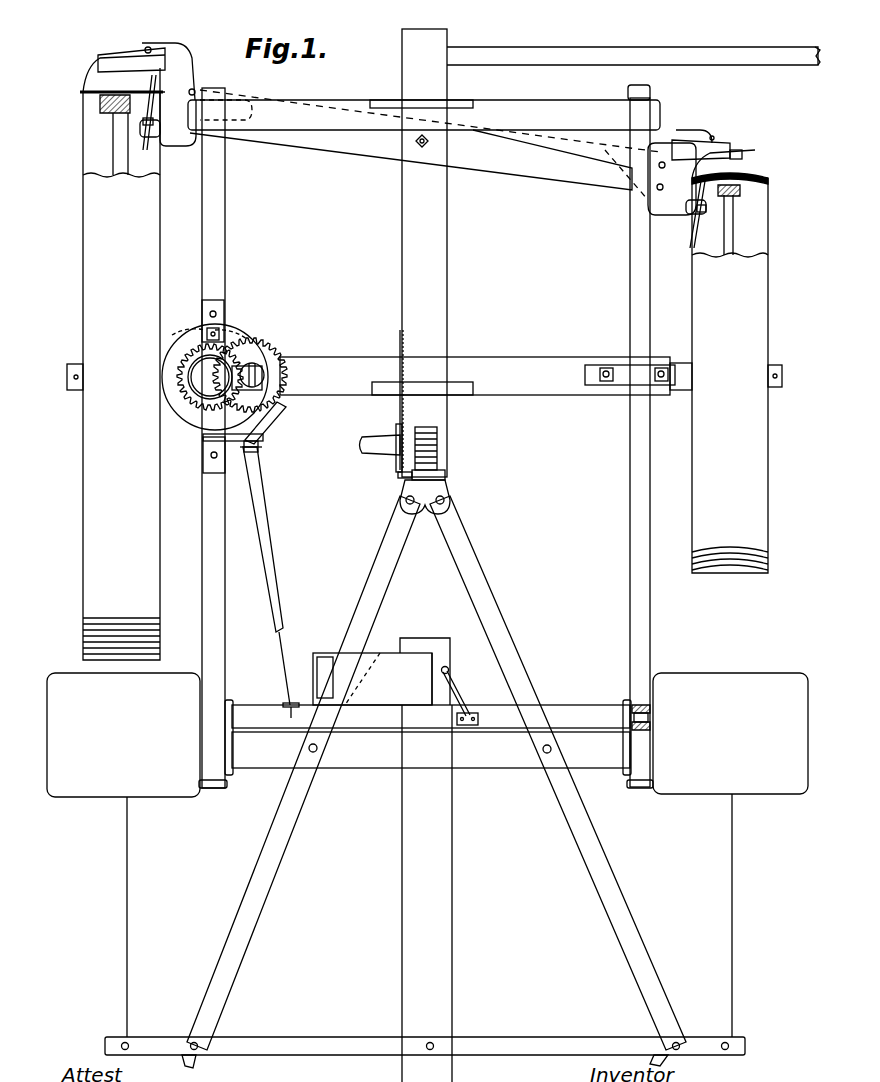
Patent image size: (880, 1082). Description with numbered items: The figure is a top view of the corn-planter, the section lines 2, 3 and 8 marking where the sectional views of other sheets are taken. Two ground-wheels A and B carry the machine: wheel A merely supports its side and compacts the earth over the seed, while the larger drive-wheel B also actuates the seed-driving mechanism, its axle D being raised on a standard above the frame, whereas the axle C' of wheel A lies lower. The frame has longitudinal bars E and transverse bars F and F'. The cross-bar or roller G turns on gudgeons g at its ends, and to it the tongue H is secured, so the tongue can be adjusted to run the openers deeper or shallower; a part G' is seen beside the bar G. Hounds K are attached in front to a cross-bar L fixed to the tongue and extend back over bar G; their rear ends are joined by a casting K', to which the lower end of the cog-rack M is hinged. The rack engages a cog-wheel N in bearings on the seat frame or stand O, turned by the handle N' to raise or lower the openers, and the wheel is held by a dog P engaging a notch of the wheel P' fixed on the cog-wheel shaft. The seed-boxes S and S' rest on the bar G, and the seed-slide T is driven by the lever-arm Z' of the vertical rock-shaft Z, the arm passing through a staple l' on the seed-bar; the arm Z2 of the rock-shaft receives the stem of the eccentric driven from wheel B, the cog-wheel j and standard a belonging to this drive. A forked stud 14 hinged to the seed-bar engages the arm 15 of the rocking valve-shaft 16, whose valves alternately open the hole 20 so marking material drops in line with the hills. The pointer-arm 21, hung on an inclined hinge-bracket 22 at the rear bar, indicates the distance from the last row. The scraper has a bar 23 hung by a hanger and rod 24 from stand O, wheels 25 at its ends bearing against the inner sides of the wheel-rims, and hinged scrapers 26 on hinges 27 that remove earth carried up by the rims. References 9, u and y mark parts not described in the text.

The section line 2 is at (482, 1081).
The section line 3 is at (835, 802).
The section line 8 is at (186, 377).
The bolt 9 is at (650, 718).
The forked stud 14 is at (477, 717).
The arm 15 is at (459, 693).
The rocking valve-shaft 16 is at (449, 668).
The hole 20 is at (231, 328).
The pointer-arm 21 is at (633, 51).
The inclined hinge-bracket 22 is at (188, 327).
The scraper bar 23 is at (425, 145).
The hanger and rod 24 is at (422, 147).
The wheels 25 is at (428, 161).
The hinged scrapers 26 is at (430, 125).
The hinges 27 is at (422, 126).
The ground-wheel A is at (730, 373).
The drive ground-wheel B is at (121, 376).
The axle C' is at (784, 376).
The axle D is at (69, 367).
The longitudinal bars E is at (232, 212).
The cross bars F is at (424, 107).
The middle cross bar F' is at (486, 376).
The cross-bar or roller G is at (431, 750).
The bracket G' is at (381, 667).
The tongue H is at (427, 893).
The hounds K is at (436, 773).
The casting K' is at (437, 497).
The cross-bar L is at (425, 1041).
The cog-rack M is at (445, 474).
The cog-wheel N is at (443, 448).
The handle N' is at (380, 436).
The frame O is at (424, 253).
The dog P is at (407, 400).
The notched wheel P' is at (390, 456).
The seed-box S is at (123, 735).
The box S' is at (730, 733).
The seed-slide T is at (428, 737).
The standard a is at (211, 385).
The gudgeons g is at (641, 717).
The cog-wheel j is at (250, 375).
The pin l' is at (282, 714).
The gear u is at (215, 377).
The pawl y is at (205, 335).
The vertical rock-shaft Z is at (236, 442).
The lever-arm Z' is at (266, 576).
The arm Z2 is at (269, 423).